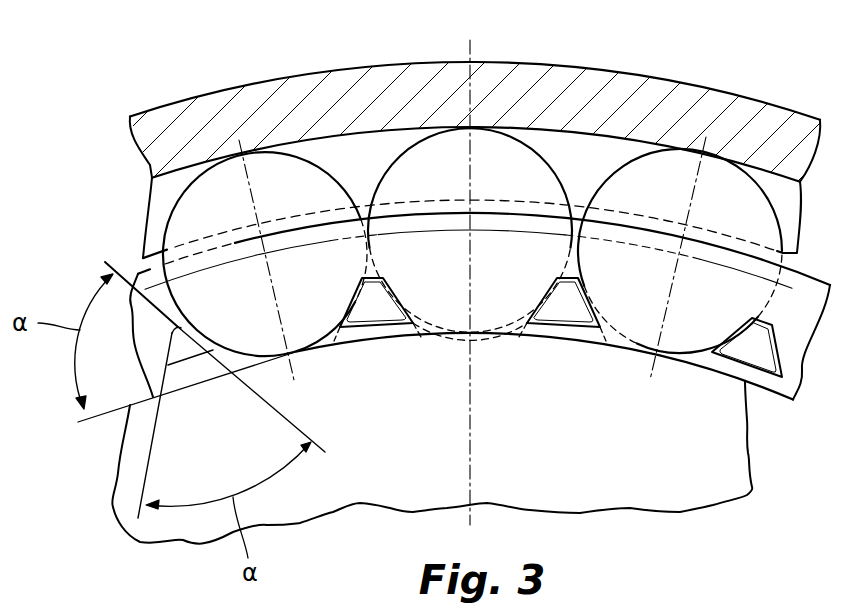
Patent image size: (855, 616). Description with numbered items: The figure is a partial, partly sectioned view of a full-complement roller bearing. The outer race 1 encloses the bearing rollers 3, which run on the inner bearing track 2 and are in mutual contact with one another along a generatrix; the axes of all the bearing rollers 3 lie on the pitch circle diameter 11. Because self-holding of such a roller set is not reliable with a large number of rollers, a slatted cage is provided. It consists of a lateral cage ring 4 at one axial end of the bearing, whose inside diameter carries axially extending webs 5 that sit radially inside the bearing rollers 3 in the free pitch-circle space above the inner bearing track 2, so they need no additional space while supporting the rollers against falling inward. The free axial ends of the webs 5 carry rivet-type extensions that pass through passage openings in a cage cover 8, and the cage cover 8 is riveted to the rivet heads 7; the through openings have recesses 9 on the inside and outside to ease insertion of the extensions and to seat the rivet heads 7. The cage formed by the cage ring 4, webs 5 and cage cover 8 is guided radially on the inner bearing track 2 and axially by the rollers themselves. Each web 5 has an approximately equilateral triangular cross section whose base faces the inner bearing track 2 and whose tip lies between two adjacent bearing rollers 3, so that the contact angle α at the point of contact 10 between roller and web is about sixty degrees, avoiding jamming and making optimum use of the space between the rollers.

The outer race 1 is at (545, 88).
The inner bearing track 2 is at (722, 462).
The bearing rollers 3 is at (280, 172).
The cage ring 4 is at (138, 272).
The webs 5 is at (195, 370).
The rivet heads 7 is at (375, 305).
The cage cover 8 is at (428, 340).
The recesses 9 is at (560, 322).
The point of contact 10 is at (200, 293).
The pitch circle diameter 11 is at (632, 334).